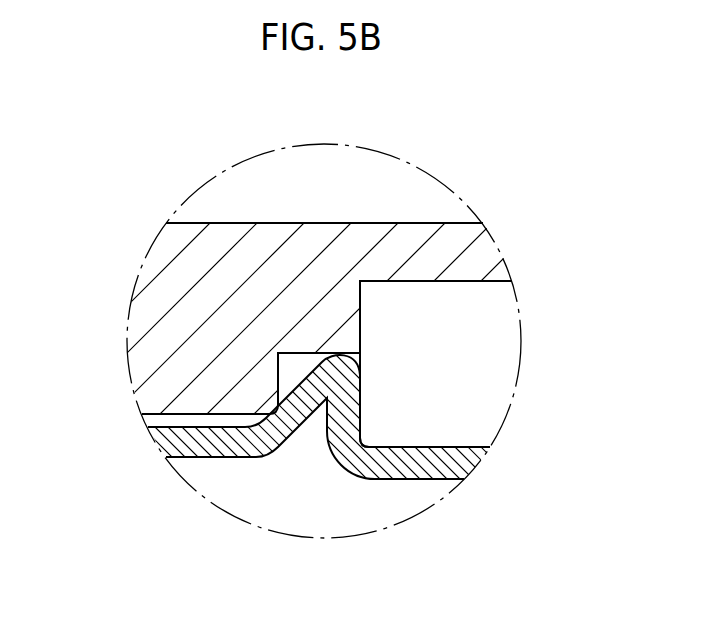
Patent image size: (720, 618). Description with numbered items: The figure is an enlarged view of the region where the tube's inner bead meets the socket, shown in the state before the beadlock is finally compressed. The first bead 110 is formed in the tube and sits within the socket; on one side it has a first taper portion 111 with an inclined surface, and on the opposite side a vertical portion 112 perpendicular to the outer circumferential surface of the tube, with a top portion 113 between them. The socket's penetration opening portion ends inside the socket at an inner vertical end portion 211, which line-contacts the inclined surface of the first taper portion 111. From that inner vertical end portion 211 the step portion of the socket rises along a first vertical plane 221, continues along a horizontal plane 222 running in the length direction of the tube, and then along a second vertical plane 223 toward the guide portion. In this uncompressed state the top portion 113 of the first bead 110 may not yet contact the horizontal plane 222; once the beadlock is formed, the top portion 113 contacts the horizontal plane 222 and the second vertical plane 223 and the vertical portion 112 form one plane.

The first bead 110 is at (360, 358).
The first taper portion 111 is at (297, 388).
The vertical portion 112 is at (360, 398).
The top portion 113 is at (337, 350).
The inner vertical end portion 211 is at (284, 428).
The first vertical plane 221 is at (278, 384).
The horizontal plane 222 is at (307, 350).
The second vertical plane 223 is at (360, 315).